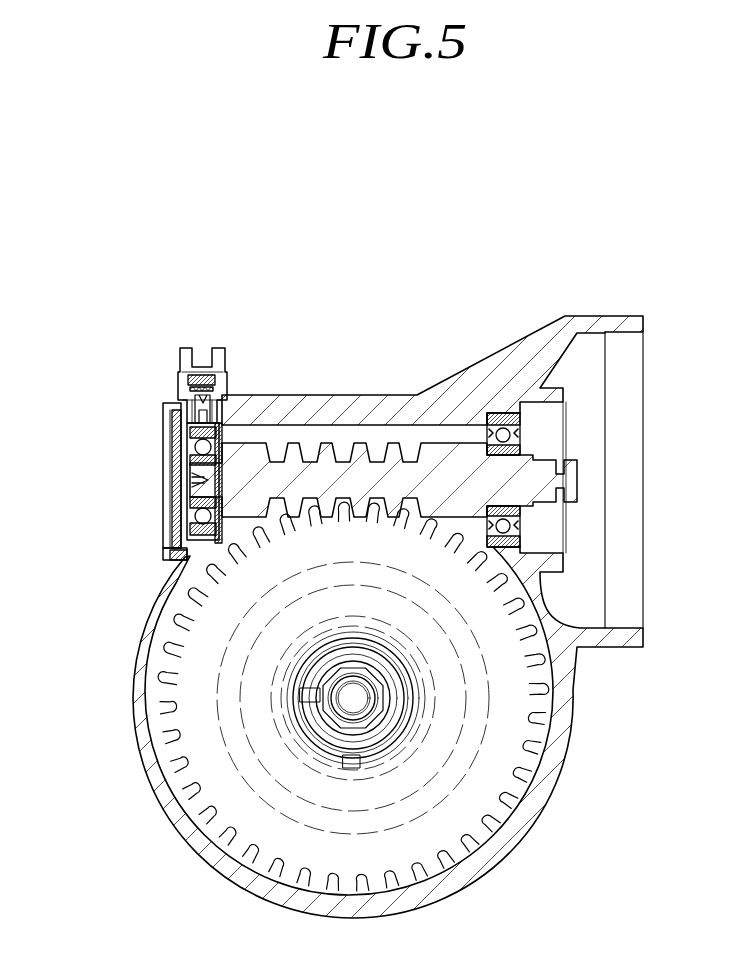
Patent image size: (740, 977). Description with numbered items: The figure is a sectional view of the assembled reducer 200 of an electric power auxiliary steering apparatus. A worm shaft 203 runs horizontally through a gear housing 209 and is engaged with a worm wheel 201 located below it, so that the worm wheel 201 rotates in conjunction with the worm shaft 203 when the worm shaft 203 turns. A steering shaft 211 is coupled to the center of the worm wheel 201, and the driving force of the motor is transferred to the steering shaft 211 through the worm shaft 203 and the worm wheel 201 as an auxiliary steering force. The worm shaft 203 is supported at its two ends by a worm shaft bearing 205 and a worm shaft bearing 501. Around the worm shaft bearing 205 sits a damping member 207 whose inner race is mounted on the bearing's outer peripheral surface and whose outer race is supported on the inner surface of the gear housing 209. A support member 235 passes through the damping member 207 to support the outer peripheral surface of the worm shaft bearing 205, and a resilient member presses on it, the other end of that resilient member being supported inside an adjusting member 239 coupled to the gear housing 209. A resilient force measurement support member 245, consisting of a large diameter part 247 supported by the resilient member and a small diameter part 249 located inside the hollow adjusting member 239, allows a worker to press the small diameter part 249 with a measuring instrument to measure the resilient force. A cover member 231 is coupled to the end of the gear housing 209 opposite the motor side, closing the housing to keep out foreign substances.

The reducer 200 is at (637, 241).
The worm wheel 201 is at (532, 747).
The worm shaft 203 is at (430, 457).
The worm shaft bearing 205 is at (218, 457).
The damping member 207 is at (177, 420).
The gear housing 209 is at (400, 396).
The steering shaft 211 is at (362, 722).
The cover member 231 is at (163, 557).
The support member 235 is at (207, 417).
The adjusting member 239 is at (210, 345).
The resilient force measurement support member 245 is at (97, 313).
The large diameter part 247 is at (183, 390).
The small diameter part 249 is at (185, 373).
The worm shaft bearing 501 is at (500, 413).